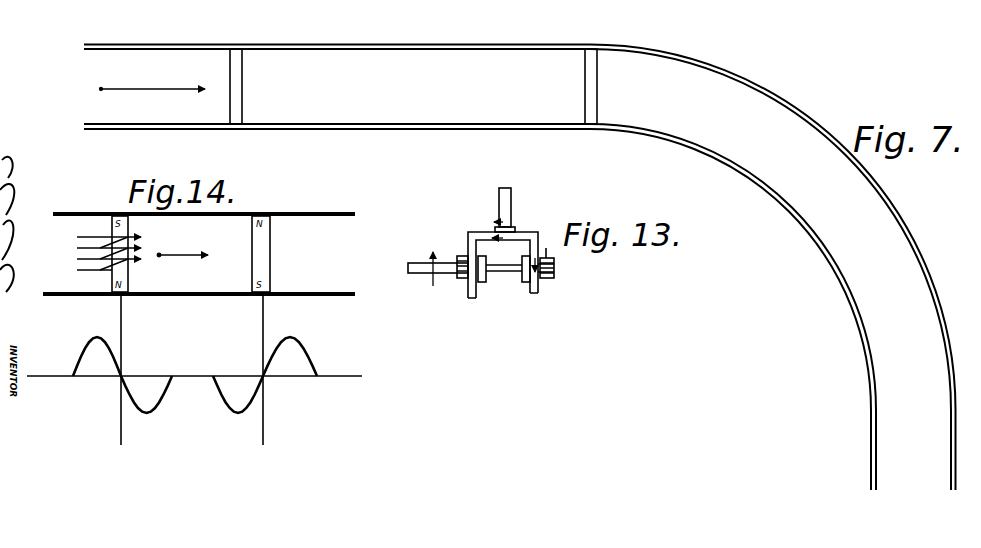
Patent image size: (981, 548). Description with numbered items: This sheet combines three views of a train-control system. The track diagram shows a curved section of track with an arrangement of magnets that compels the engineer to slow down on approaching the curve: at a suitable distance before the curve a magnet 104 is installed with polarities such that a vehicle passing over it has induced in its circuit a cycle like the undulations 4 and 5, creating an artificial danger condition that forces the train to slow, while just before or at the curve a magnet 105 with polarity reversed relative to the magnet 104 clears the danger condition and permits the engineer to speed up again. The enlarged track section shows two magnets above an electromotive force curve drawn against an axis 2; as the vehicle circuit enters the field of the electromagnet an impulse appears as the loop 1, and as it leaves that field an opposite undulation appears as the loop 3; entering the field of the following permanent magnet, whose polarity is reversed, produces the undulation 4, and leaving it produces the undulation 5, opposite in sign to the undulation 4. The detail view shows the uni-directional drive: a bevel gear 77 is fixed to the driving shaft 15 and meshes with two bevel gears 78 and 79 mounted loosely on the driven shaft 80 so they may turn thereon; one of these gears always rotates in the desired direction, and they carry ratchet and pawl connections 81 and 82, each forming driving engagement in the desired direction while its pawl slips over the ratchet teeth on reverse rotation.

In FIG. 7, the magnet 104 is at (243, 88).
In FIG. 7, the magnet 105 is at (598, 71).
In FIG. 14, the loop 1 is at (92, 340).
In FIG. 14, the axis line 2 is at (54, 376).
In FIG. 14, the loop 3 is at (158, 410).
In FIG. 14, the undulation 4 is at (238, 415).
In FIG. 14, the undulation 5 is at (297, 345).
In FIG. 13, the driving shaft 15 is at (519, 188).
In FIG. 13, the bevel gear 77 is at (524, 232).
In FIG. 13, the bevel gear 78 is at (478, 282).
In FIG. 13, the bevel gear 79 is at (527, 284).
In FIG. 13, the driven shaft 80 is at (424, 276).
In FIG. 13, the ratchet and pawl connection 81 is at (461, 256).
In FIG. 13, the ratchet and pawl connection 82 is at (555, 267).